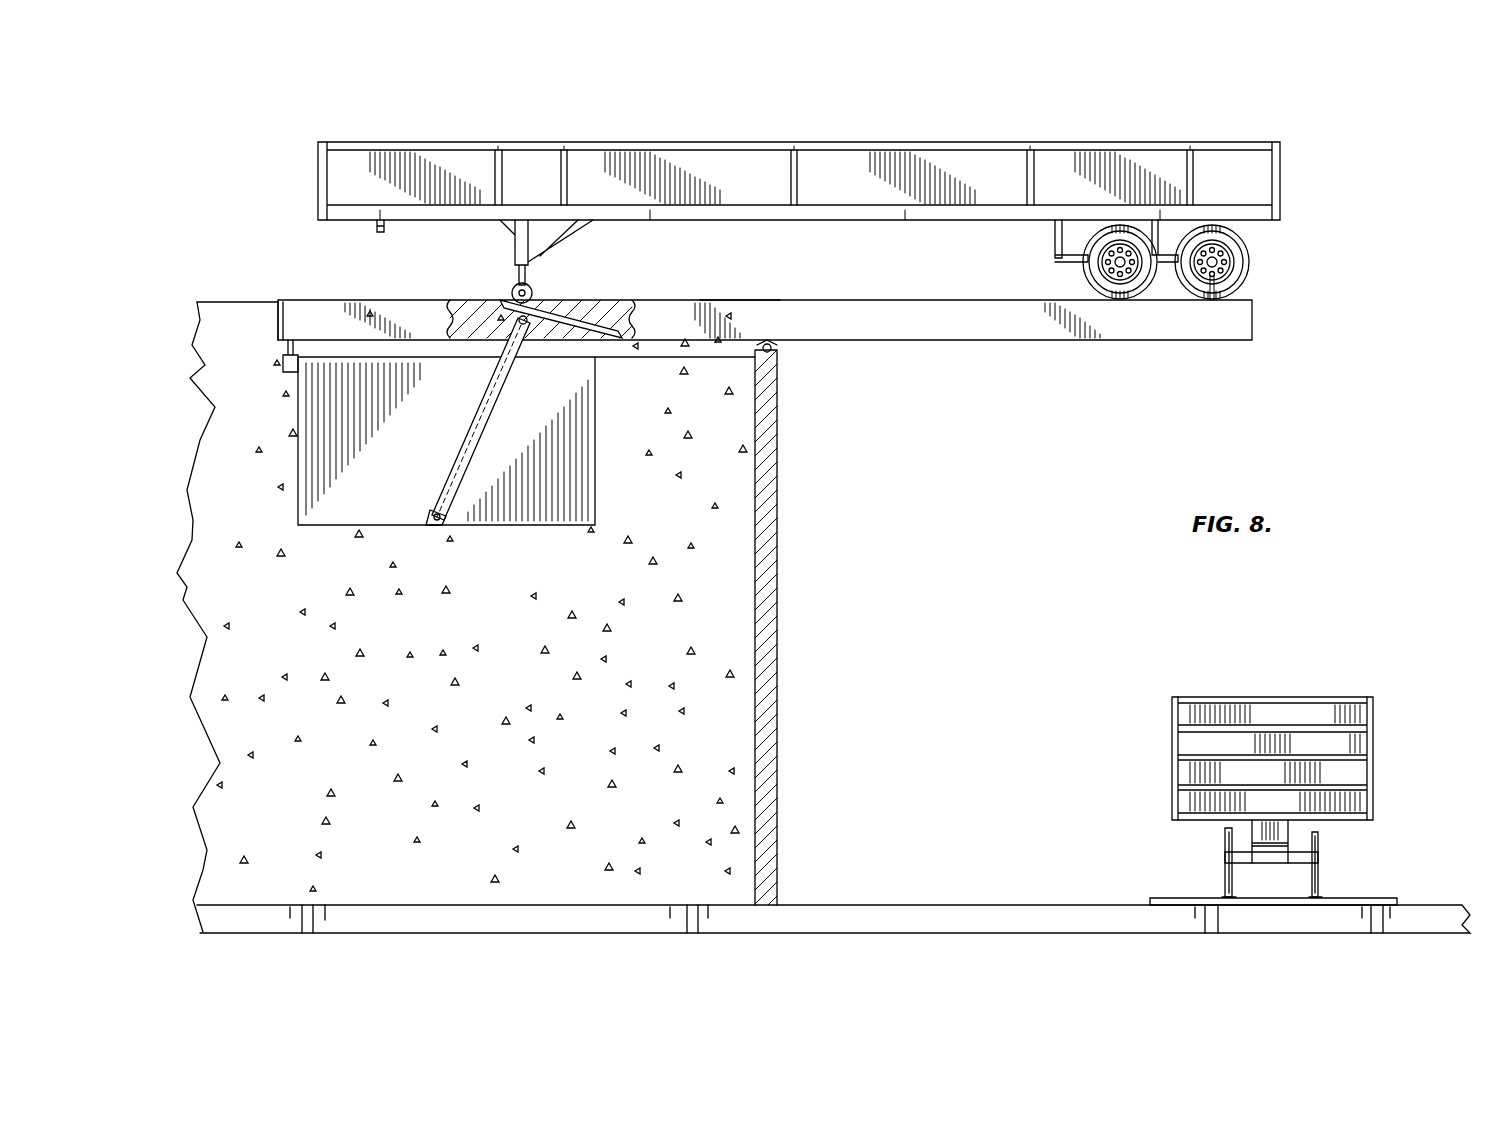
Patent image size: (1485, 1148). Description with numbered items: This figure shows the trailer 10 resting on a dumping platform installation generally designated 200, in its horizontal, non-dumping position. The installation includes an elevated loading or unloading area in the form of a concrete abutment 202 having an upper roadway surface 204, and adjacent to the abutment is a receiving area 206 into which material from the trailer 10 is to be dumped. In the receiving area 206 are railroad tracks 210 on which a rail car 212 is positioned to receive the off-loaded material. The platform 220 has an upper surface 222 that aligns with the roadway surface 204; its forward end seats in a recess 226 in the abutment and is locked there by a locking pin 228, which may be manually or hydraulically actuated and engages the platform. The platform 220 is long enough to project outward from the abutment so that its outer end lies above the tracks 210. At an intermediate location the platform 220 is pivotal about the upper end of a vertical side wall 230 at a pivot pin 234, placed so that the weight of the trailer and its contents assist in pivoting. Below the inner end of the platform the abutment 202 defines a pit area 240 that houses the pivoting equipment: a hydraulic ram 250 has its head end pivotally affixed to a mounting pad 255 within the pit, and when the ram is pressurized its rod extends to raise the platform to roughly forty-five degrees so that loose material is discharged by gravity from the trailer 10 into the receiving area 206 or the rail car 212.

The trailer 10 is at (808, 128).
The dumping platform 200 is at (268, 226).
The concrete abutment 202 is at (469, 634).
The upper roadway surface 204 is at (250, 302).
The receiving area 206 is at (1037, 544).
The railroad tracks 210 is at (1225, 898).
The rail car 212 is at (1170, 735).
The platform 220 is at (1030, 332).
The upper surface 222 is at (738, 300).
The recess 226 is at (272, 302).
The locking pin 228 is at (283, 366).
The vertical side wall 230 is at (778, 537).
The pivot pin 234 is at (770, 348).
The pit area 240 is at (434, 434).
The hydraulic ram 250 is at (478, 447).
The mounting pad 255 is at (425, 517).